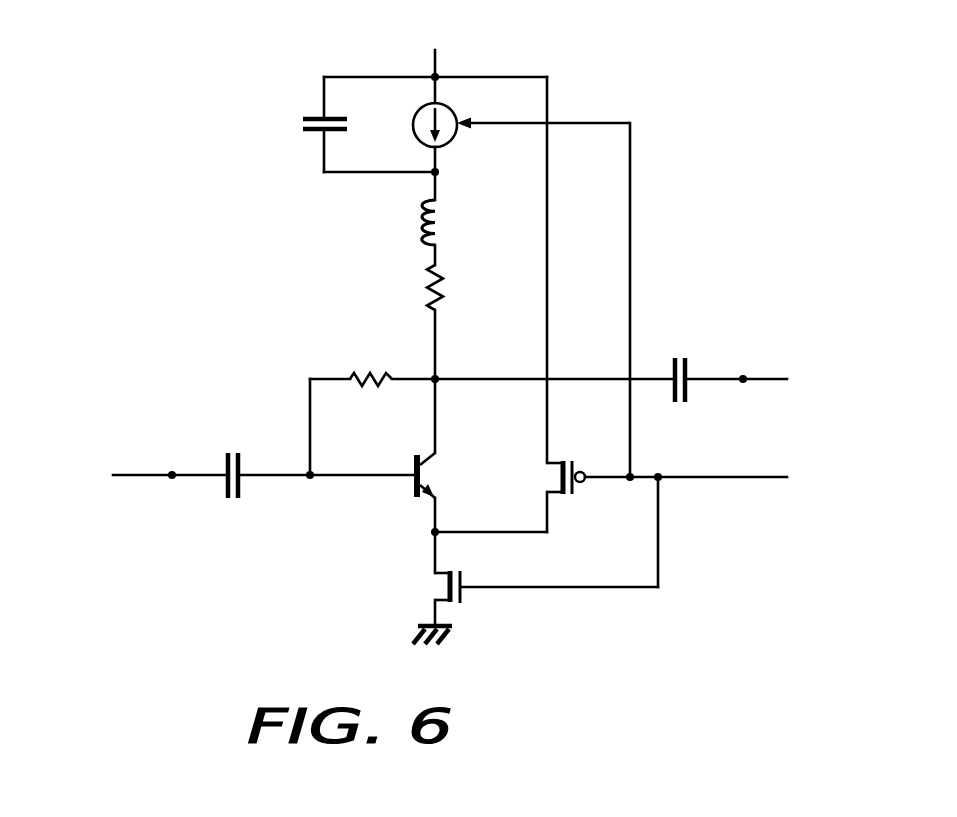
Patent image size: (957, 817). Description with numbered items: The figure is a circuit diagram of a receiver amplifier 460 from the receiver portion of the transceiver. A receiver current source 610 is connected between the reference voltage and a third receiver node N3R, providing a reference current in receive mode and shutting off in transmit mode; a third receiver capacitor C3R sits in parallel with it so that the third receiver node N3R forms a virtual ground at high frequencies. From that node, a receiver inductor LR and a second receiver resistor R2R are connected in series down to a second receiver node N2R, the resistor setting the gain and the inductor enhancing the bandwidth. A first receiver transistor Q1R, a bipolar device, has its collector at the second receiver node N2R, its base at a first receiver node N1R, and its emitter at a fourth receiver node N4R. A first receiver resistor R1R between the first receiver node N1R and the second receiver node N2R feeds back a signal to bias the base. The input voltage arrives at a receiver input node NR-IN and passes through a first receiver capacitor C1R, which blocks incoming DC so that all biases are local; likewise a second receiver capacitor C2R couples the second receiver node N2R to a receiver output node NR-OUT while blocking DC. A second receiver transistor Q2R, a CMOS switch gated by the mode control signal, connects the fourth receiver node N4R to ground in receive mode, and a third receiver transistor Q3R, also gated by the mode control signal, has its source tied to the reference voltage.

The receiver current source 610 is at (417, 110).
The receiver amplifier 460 is at (648, 685).
The third receiver capacitor C3R is at (303, 122).
The third receiver node N3R is at (439, 171).
The receiver inductor LR is at (445, 222).
The second receiver resistor R2R is at (453, 290).
The second receiver node N2R is at (436, 378).
The first receiver resistor R1R is at (371, 360).
The receiver input node NR-IN is at (172, 472).
The first receiver capacitor C1R is at (237, 496).
The first receiver node N1R is at (310, 478).
The first receiver transistor Q1R is at (442, 475).
The fourth receiver node N4R is at (430, 532).
The third receiver transistor Q3R is at (546, 481).
The second receiver transistor Q2R is at (428, 591).
The second receiver capacitor C2R is at (680, 399).
The receiver output node NR-OUT is at (743, 377).